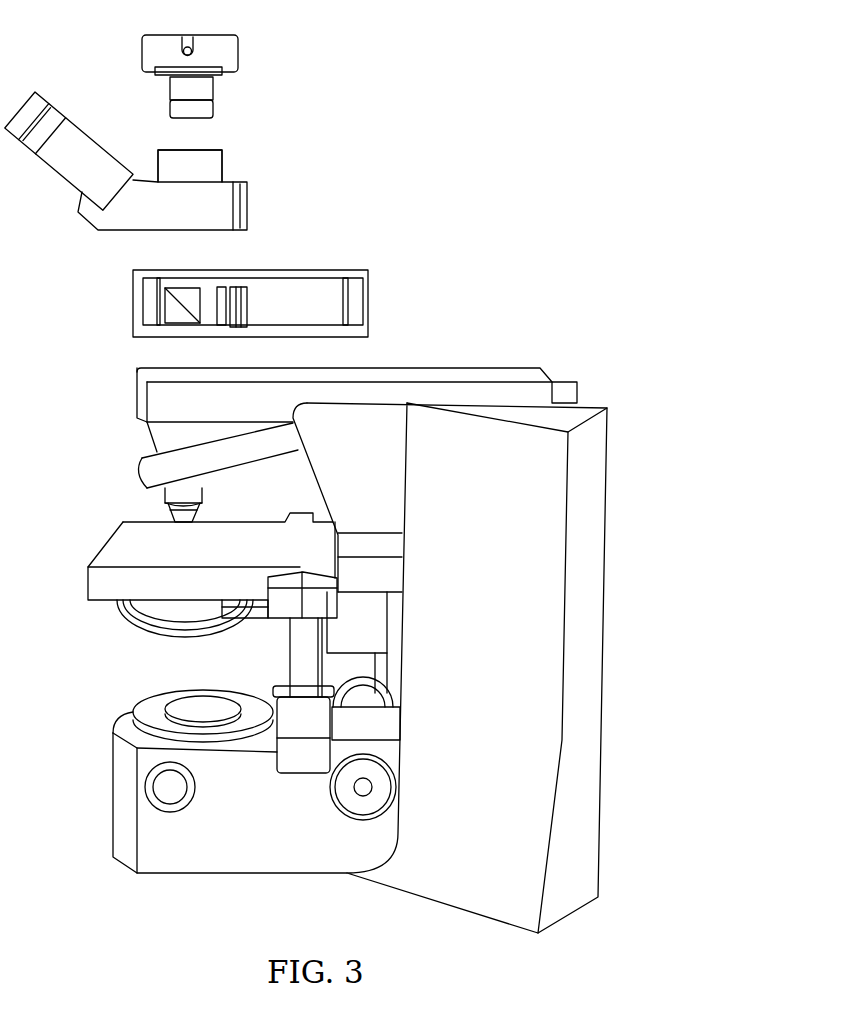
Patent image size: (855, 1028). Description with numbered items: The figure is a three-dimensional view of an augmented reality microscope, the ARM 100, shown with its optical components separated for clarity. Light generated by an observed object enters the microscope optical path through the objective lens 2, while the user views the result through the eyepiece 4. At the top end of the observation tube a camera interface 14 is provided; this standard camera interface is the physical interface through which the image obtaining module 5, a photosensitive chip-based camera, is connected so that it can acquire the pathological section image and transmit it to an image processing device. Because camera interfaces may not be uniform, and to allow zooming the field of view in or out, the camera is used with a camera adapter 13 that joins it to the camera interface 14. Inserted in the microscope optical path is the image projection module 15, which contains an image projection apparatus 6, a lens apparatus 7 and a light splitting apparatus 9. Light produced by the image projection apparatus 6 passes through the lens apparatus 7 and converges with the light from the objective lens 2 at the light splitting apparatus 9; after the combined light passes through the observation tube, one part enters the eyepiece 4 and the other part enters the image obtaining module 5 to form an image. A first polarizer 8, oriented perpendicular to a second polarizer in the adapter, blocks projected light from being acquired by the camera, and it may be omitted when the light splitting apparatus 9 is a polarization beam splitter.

The ARM 100 is at (404, 105).
The objective lens 2 is at (176, 513).
The eyepiece 4 is at (43, 108).
The image obtaining module 5 is at (240, 45).
The camera adapter 13 is at (216, 98).
The camera interface 14 is at (224, 167).
The image projection module 15 is at (131, 303).
The image projection apparatus 6 is at (351, 313).
The lens apparatus 7 is at (250, 297).
The first polarizer 8 is at (224, 284).
The light splitting apparatus 9 is at (174, 312).